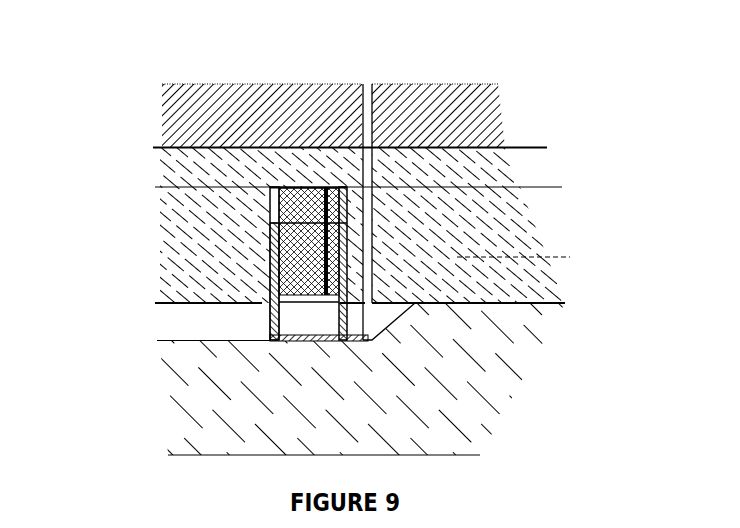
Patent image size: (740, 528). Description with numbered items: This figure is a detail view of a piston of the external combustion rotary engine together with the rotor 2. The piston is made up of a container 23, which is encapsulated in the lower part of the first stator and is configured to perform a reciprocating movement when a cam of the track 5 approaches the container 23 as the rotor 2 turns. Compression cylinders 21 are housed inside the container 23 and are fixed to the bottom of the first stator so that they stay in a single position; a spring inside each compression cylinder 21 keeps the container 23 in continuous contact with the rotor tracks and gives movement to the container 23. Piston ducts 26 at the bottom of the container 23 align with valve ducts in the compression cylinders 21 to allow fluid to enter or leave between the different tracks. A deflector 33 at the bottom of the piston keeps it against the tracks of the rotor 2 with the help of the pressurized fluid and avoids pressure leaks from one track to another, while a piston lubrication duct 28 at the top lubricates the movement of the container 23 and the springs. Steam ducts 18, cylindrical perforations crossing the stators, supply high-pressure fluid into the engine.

The rotor 2 is at (288, 401).
The track 5 is at (460, 313).
The steam ducts 18 is at (366, 83).
The compression cylinders 21 is at (306, 288).
The container 23 is at (268, 303).
The piston ducts 26 is at (268, 336).
The piston lubrication duct 28 is at (266, 195).
The deflector 33 is at (262, 339).